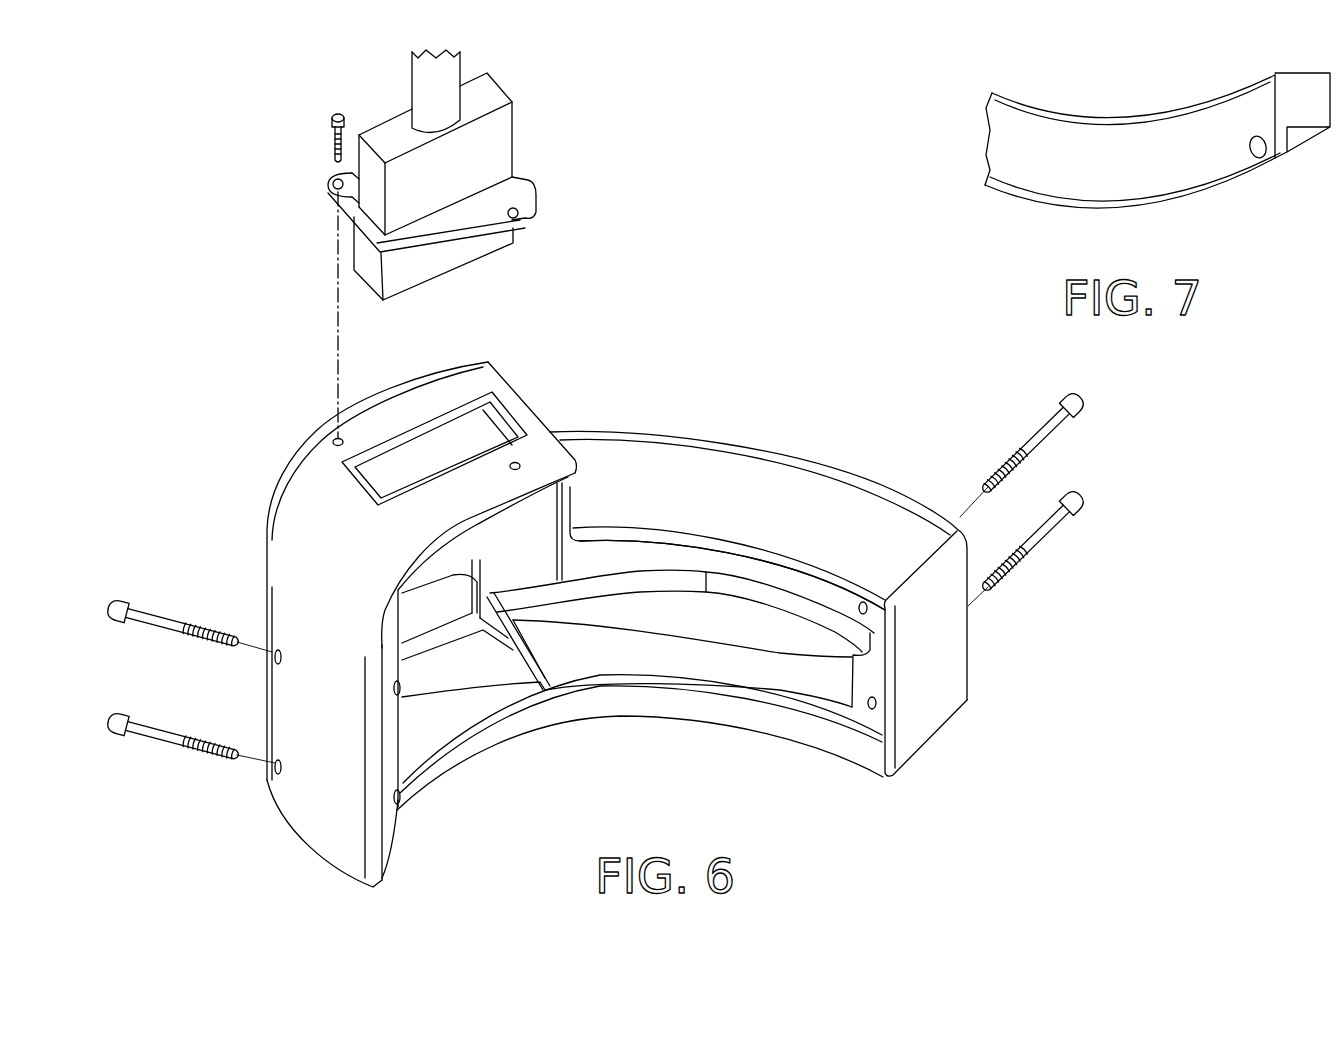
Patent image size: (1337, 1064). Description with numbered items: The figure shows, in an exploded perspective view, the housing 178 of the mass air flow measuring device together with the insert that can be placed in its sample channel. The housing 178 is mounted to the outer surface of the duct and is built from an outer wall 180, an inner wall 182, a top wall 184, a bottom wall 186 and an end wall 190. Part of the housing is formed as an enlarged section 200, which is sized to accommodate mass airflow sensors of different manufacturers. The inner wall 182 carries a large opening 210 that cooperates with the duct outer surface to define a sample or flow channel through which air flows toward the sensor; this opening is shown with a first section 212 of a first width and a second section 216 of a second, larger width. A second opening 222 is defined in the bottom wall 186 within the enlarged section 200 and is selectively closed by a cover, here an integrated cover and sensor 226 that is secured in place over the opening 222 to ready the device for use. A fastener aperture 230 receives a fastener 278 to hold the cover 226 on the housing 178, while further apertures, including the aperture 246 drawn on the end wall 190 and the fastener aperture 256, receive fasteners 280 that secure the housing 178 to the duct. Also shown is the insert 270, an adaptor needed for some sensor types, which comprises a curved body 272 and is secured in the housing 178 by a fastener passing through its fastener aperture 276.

In FIG. 6, the housing 178 is at (787, 443).
In FIG. 6, the outer wall 180 is at (285, 687).
In FIG. 6, the inner wall 182 is at (807, 583).
In FIG. 6, the top wall 184 is at (838, 747).
In FIG. 6, the bottom wall 186 is at (632, 460).
In FIG. 6, the end wall 190 is at (953, 640).
In FIG. 6, the enlarged section 200 is at (308, 523).
In FIG. 6, the large opening 210 is at (723, 622).
In FIG. 6, the first section 212 is at (792, 640).
In FIG. 6, the second section 216 is at (453, 688).
In FIG. 6, the second opening 222 is at (417, 450).
In FIG. 6, the integrated cover and sensor 226 is at (518, 167).
In FIG. 6, the fastener aperture 230 is at (335, 440).
In FIG. 6, the fastener hole 246 is at (873, 703).
In FIG. 6, the fastener aperture 256 is at (402, 690).
In FIG. 6, the fastener 278 is at (330, 133).
In FIG. 6, the fasteners 280 is at (596, 604).
In FIG. 7, the insert 270 is at (1037, 147).
In FIG. 7, the curved body 272 is at (1217, 127).
In FIG. 7, the fastener aperture 276 is at (1255, 153).